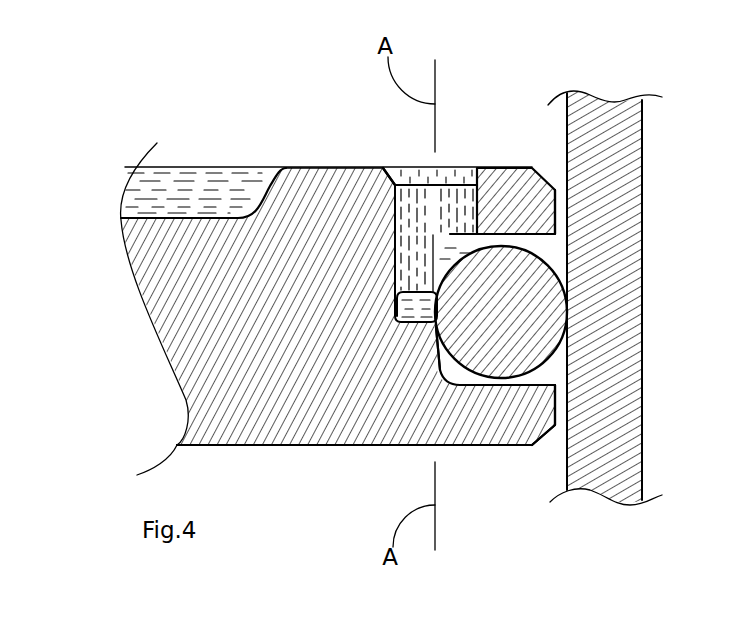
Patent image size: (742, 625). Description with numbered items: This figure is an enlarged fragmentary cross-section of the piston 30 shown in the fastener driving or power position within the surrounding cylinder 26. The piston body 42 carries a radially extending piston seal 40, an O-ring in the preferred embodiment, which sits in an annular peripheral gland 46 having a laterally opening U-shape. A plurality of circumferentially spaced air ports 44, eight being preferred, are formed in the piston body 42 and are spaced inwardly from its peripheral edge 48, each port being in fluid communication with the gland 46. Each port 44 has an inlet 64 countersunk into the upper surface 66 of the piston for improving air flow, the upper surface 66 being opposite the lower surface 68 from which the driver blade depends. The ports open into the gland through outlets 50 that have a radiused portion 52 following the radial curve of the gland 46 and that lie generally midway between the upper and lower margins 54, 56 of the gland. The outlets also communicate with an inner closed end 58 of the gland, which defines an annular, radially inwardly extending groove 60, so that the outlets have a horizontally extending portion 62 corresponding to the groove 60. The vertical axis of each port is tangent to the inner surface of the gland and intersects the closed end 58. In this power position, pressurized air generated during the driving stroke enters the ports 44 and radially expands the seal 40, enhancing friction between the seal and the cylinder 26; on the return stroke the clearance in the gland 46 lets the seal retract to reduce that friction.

The cylinder 26 is at (600, 473).
The piston 30 is at (307, 393).
The piston seal 40 is at (510, 350).
The piston body 42 is at (255, 293).
The air ports 44 is at (510, 190).
The gland 46 is at (458, 385).
The peripheral edge 48 is at (557, 203).
The outlets 50 is at (432, 225).
The radiused portion 52 is at (453, 215).
The upper margin 54 is at (437, 256).
The lower margin 56 is at (533, 410).
The inner closed end 58 is at (433, 345).
The groove 60 is at (405, 325).
The horizontally extending portion 62 is at (430, 258).
The inlet 64 is at (383, 168).
The upper surface 66 is at (232, 182).
The lower surface 68 is at (227, 445).